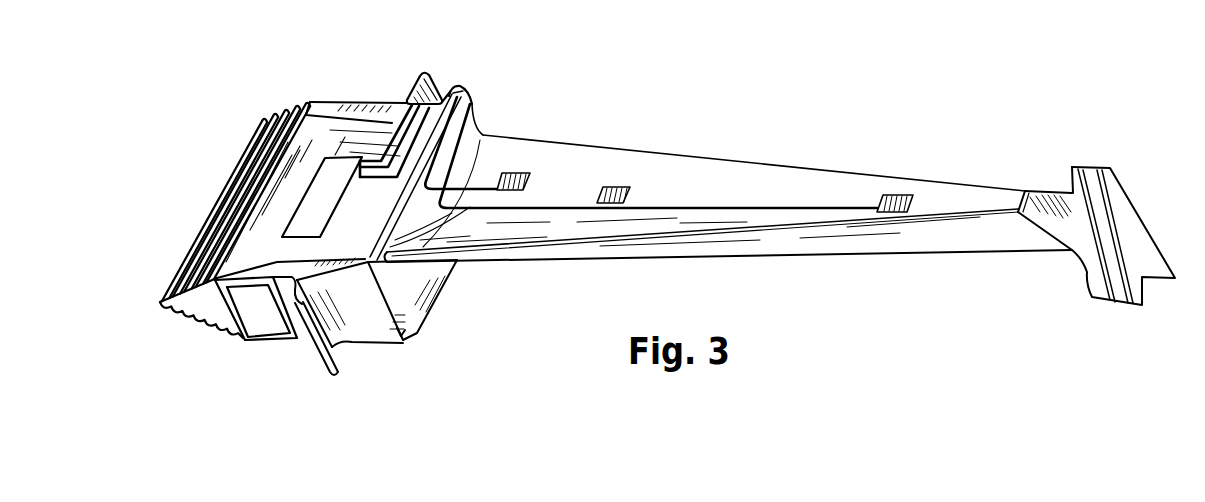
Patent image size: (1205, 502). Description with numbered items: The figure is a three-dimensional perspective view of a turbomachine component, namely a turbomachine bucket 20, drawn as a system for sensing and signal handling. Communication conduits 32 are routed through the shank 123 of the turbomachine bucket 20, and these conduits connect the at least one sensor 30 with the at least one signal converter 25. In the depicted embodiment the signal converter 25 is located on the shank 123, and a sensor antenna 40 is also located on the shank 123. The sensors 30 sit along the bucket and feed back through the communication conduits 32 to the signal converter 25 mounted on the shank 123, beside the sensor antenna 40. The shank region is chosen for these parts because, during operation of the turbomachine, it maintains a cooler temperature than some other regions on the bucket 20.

The turbomachine bucket 20 is at (405, 97).
The shank 123 is at (462, 90).
The communication conduits 32 is at (404, 114).
The sensor 30 is at (527, 172).
The signal converter 25 is at (318, 197).
The sensor antenna 40 is at (268, 328).